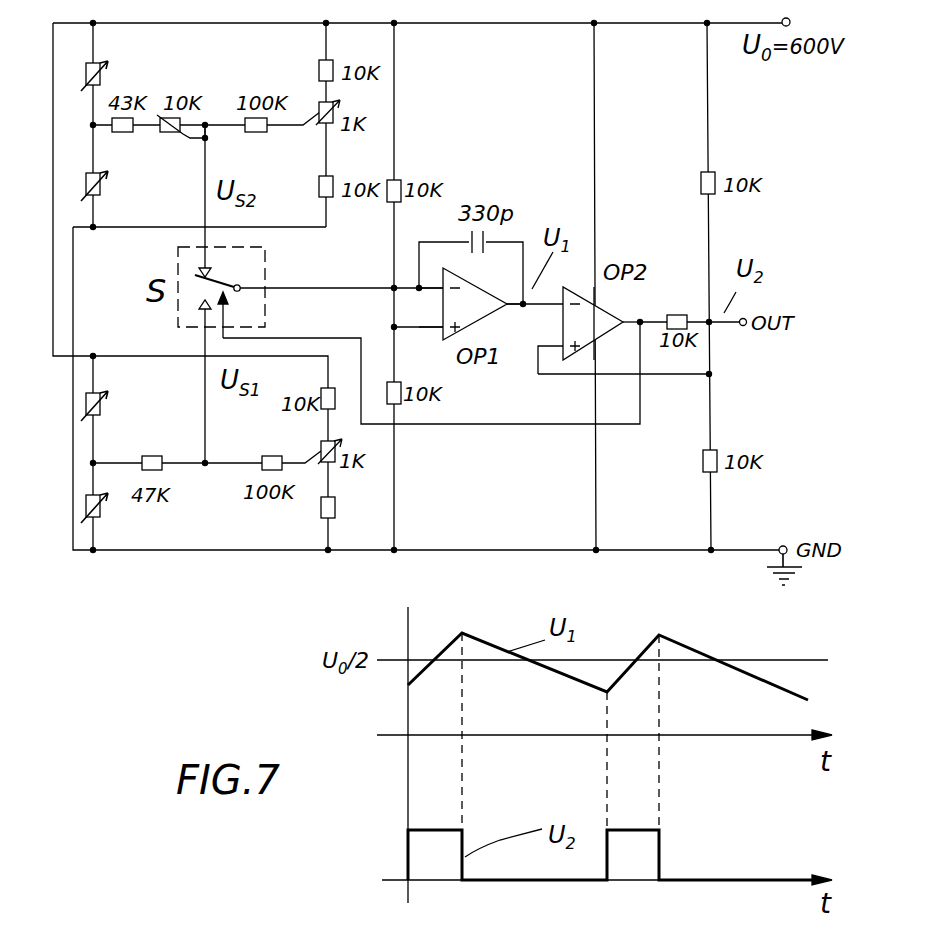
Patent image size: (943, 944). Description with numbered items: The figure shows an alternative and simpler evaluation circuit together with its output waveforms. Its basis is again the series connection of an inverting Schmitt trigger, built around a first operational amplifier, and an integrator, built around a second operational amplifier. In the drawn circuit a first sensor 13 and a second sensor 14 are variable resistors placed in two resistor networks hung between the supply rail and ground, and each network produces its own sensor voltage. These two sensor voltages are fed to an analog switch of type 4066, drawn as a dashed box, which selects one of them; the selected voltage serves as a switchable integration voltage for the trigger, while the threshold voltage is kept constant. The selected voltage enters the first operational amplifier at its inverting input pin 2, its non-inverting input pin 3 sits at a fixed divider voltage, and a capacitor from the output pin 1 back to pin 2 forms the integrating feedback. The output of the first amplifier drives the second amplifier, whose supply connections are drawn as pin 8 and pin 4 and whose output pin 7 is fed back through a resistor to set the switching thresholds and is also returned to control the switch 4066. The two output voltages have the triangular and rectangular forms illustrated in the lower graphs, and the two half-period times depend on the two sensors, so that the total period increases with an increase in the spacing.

The sensor (temperature-dependent resistor) 13 is at (132, 448).
The sensor (temperature-dependent resistor) 14 is at (147, 119).
The analog switch IC 4066 is at (254, 291).
The OP1 output pin 1 is at (512, 291).
The OP1 inverting input pin 2 is at (431, 274).
The OP1 non-inverting input pin 3 is at (431, 314).
The OP2 negative supply pin 4 is at (604, 343).
The OP2 output pin 7 is at (628, 309).
The OP2 positive supply pin 8 is at (583, 297).